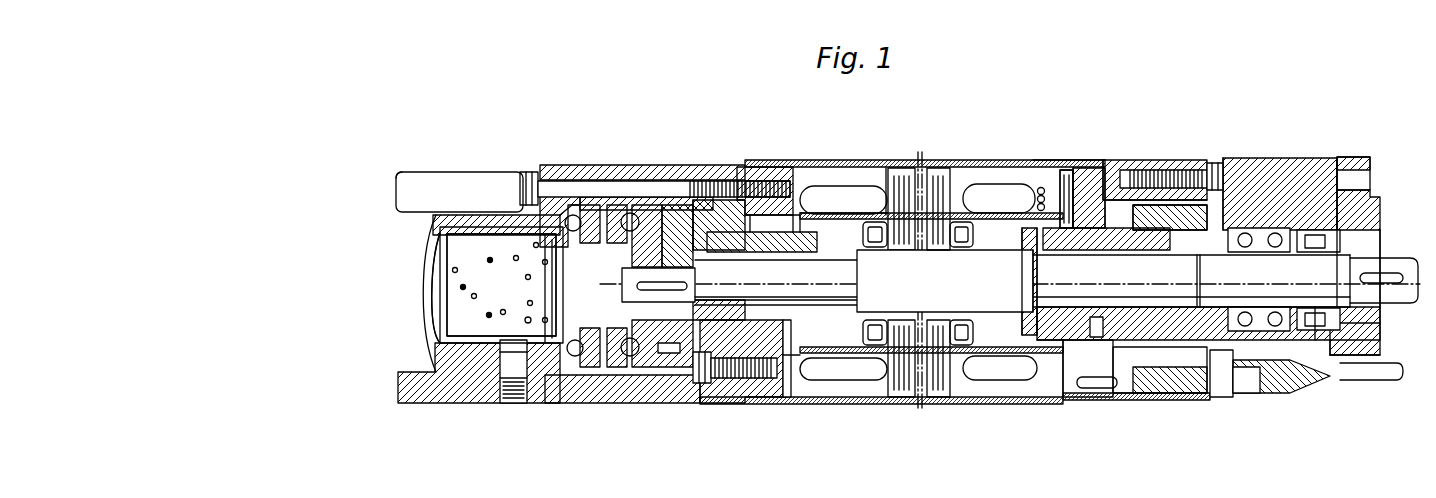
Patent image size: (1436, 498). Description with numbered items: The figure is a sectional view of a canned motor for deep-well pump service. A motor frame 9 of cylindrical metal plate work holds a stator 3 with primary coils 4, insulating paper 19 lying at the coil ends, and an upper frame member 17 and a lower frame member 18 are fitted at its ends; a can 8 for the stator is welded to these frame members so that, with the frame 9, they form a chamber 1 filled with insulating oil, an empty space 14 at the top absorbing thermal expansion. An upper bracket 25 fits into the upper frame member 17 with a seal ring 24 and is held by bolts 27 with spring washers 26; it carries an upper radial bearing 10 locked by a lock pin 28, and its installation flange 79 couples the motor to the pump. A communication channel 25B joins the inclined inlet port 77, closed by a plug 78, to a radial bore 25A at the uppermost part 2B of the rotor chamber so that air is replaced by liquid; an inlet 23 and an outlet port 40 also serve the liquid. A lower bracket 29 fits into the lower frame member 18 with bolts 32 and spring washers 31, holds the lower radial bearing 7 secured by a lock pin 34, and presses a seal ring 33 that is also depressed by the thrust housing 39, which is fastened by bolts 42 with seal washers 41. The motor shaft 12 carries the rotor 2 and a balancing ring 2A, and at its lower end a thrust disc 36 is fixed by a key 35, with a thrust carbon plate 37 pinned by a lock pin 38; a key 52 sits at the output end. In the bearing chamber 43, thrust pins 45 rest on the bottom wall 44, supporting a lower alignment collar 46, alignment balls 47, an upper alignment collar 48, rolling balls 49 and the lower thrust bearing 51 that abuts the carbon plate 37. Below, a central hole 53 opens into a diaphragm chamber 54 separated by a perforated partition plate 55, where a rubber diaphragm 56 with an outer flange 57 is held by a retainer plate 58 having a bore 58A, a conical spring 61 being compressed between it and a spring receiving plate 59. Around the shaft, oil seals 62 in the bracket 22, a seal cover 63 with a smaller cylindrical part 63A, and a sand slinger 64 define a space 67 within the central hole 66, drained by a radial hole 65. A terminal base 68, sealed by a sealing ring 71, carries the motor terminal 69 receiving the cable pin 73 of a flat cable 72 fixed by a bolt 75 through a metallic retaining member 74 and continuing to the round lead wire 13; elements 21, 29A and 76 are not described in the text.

The chamber for the stator 1 is at (1033, 160).
The rotor 2 is at (933, 250).
The balancing ring 2A is at (1030, 335).
The uppermost part of the chamber for the rotor 2B is at (1125, 228).
The stator 3 is at (900, 195).
The primary coils 4 is at (977, 184).
The lower radial bearing 7 is at (803, 195).
The can for the stator 8 is at (822, 213).
The motor frame 9 is at (855, 162).
The upper radial bearing 10 is at (1115, 205).
The motor shaft 12 is at (1315, 285).
The round lead wire 13 is at (1385, 380).
The empty space 14 is at (1063, 205).
The upper frame member 17 is at (1070, 195).
The lower frame member 18 is at (760, 180).
The insulating paper 19 is at (862, 353).
The sensor 21 is at (866, 353).
The upper bracket 22 is at (780, 167).
The inlet 23 is at (752, 165).
The seal ring 24 is at (1133, 200).
The upper bracket 25 is at (1177, 165).
The bore 25A is at (1154, 281).
The communication channel 25B is at (1064, 281).
The spring washers 26 is at (1207, 190).
The bolts 27 is at (1217, 163).
The lock pin 28 is at (1063, 343).
The lower bracket 29 is at (786, 335).
The flange 29A is at (783, 360).
The spring washers 31 is at (730, 397).
The bolts 32 is at (690, 390).
The seal ring 33 is at (730, 180).
The lock pin 34 is at (807, 365).
The key 35 is at (700, 283).
The thrust disc 36 is at (672, 205).
The thrust carbon plate 37 is at (655, 205).
The lock pin 38 is at (662, 355).
The thrust housing 39 is at (685, 200).
The outlet port 40 is at (508, 390).
The seal washers 41 is at (523, 172).
The bolts 42 is at (525, 240).
The bearing chamber 43 is at (600, 380).
The bottom wall 44 is at (582, 366).
The thrust pins 45 is at (575, 215).
The lower alignment collar 46 is at (573, 215).
The alignment balls 47 is at (590, 205).
The upper alignment collar 48 is at (615, 205).
The rolling balls 49 is at (630, 356).
The lower thrust bearing 51 is at (628, 213).
The key 52 is at (1392, 272).
The central hole 53 is at (570, 265).
The chamber for a diaphragm 54 is at (553, 365).
The perforated partition plate 55 is at (565, 303).
The diaphragm 56 is at (500, 235).
The outer flange 57 is at (433, 355).
The retainer plate 58 is at (440, 338).
The bore 58A is at (459, 192).
The spring receiving plate 59 is at (466, 203).
The spring 61 is at (528, 320).
The oil seals 62 is at (1235, 225).
The seal cover 63 is at (1280, 230).
The cylindrical part of smaller diameter 63A is at (1313, 281).
The sand slinger 64 is at (1340, 352).
The radial hole 65 is at (1297, 213).
The central hole 66 is at (1350, 232).
The space 67 is at (1330, 332).
The terminal base 68 is at (1097, 340).
The motor terminal 69 is at (1117, 388).
The sealing ring 71 is at (1110, 367).
The flat cable 72 is at (1280, 362).
The cable pin 73 is at (1183, 393).
The metallic retaining member 74 is at (1190, 380).
The bolt 75 is at (1235, 385).
The winding 76 is at (983, 345).
The inlet port 77 is at (1220, 281).
The plug 78 is at (1253, 228).
The installation flange 79 is at (1355, 157).